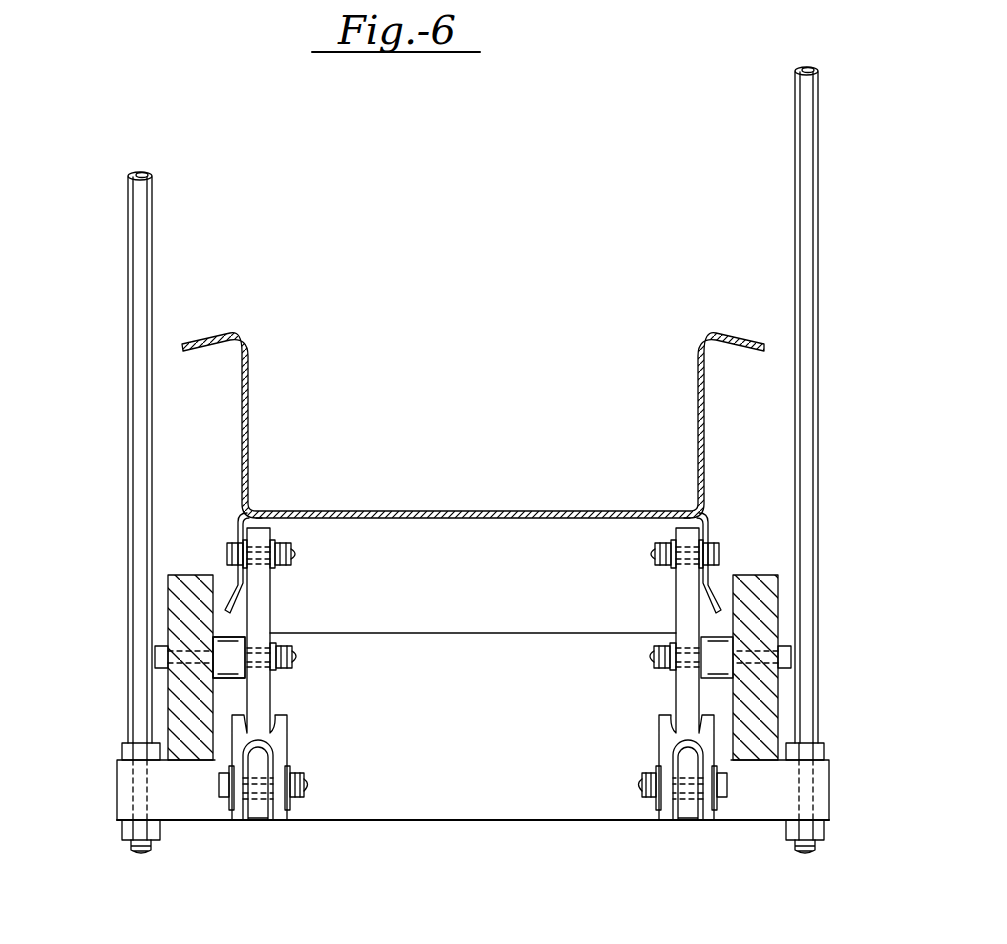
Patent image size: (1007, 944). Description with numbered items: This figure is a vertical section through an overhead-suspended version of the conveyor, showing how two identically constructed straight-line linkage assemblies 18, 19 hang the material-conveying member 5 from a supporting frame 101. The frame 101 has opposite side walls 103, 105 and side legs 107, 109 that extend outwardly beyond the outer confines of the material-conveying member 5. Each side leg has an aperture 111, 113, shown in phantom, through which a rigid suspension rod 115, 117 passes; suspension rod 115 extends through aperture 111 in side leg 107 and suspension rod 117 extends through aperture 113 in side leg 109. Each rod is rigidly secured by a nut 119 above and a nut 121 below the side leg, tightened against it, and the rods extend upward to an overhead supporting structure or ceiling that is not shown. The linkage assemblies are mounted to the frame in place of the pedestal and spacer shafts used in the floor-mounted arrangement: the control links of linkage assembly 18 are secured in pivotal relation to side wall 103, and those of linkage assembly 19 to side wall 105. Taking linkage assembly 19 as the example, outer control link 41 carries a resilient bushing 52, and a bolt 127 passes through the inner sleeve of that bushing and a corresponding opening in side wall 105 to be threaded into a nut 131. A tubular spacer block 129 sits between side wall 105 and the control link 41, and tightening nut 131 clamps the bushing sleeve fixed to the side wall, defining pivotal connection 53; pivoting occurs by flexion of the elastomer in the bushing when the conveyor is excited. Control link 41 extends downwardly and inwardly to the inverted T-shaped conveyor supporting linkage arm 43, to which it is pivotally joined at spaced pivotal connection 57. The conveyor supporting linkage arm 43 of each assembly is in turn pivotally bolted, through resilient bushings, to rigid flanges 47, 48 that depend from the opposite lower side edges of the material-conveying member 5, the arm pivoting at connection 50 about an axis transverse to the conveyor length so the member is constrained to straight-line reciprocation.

The material-conveying member 5 is at (695, 352).
The straight-line linkage assembly 18 is at (643, 762).
The straight-line linkage assembly 19 is at (297, 750).
The outer control link 41 is at (260, 705).
The conveyor supporting linkage arm 43 is at (270, 580).
The rigid flange 47 is at (710, 533).
The rigid flange 48 is at (238, 533).
The pivotal connection 50 is at (268, 520).
The resilient bushing 52 is at (245, 633).
The pivotal connection 53 is at (305, 658).
The pivotal connection 57 is at (318, 790).
The supporting frame 101 is at (472, 812).
The side wall 103 is at (782, 703).
The side wall 105 is at (167, 690).
The side leg 107 is at (183, 807).
The side leg 109 is at (755, 807).
The aperture 111 is at (127, 793).
The aperture 113 is at (820, 795).
The suspension rod 115 is at (128, 615).
The suspension rod 117 is at (817, 480).
The nut 119 is at (122, 745).
The nut 121 is at (118, 828).
The bolt 127 is at (158, 658).
The tubular spacer block 129 is at (225, 630).
The nut 131 is at (280, 633).